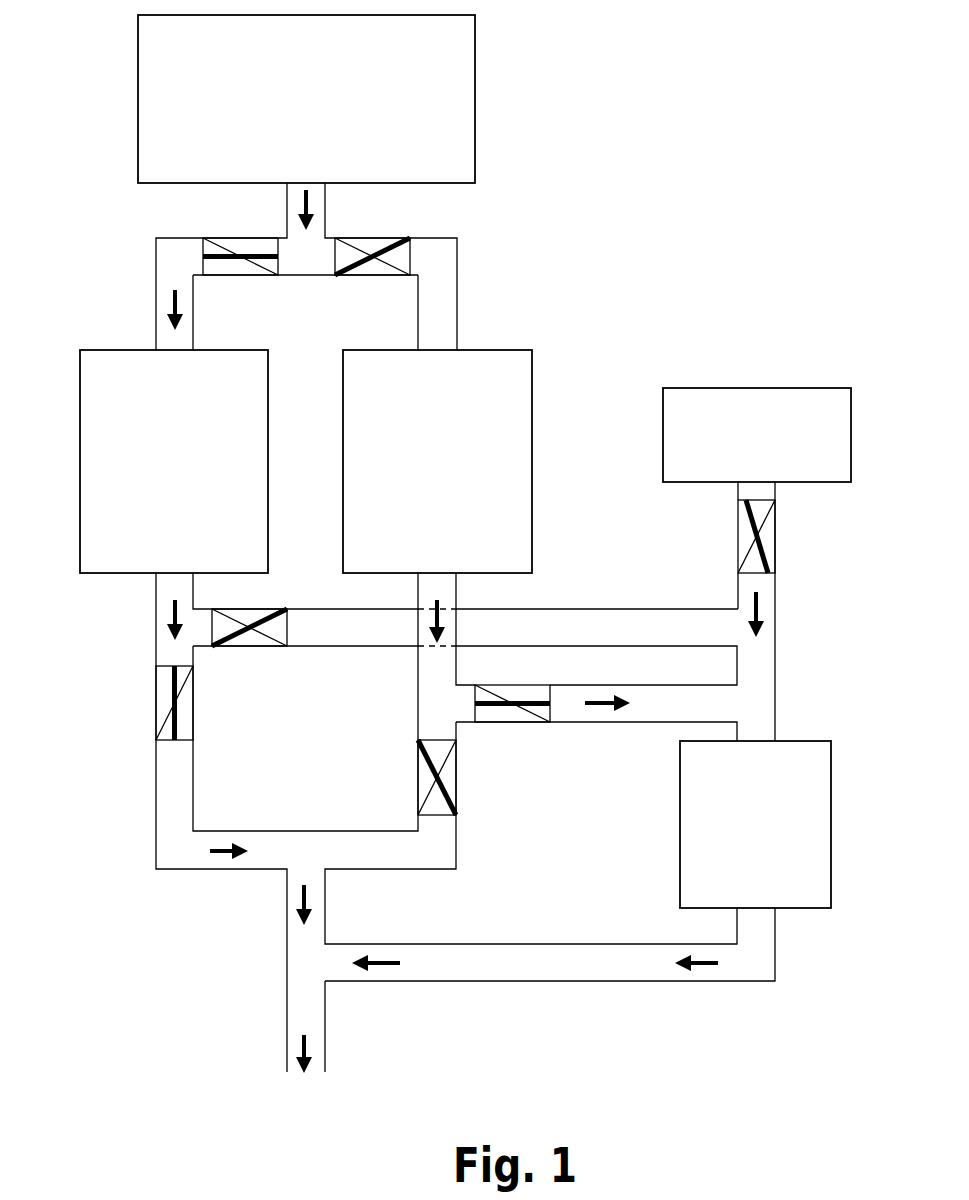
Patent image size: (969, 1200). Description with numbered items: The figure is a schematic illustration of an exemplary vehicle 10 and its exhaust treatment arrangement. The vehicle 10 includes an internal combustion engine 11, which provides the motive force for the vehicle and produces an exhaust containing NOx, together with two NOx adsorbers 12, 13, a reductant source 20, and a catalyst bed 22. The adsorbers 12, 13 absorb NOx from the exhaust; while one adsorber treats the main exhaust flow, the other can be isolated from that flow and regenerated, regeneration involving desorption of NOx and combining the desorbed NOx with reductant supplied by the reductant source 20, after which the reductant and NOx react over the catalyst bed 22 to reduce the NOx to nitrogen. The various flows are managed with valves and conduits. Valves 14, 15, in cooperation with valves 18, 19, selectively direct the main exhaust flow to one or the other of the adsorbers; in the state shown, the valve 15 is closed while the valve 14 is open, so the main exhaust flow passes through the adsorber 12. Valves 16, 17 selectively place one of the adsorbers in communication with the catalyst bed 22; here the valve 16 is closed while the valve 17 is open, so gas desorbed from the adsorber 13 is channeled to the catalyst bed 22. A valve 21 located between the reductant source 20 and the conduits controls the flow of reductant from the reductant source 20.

The vehicle 10 is at (96, 44).
The internal combustion engine 11 is at (475, 70).
The NOx adsorber 12 is at (233, 350).
The NOx adsorber 13 is at (493, 350).
The valve 14 is at (237, 238).
The valve 15 is at (365, 238).
The valve 16 is at (255, 609).
The valve 17 is at (497, 722).
The valve 18 is at (156, 710).
The valve 19 is at (418, 767).
The reductant source 20 is at (777, 388).
The valve 21 is at (775, 537).
The catalyst bed 22 is at (831, 793).